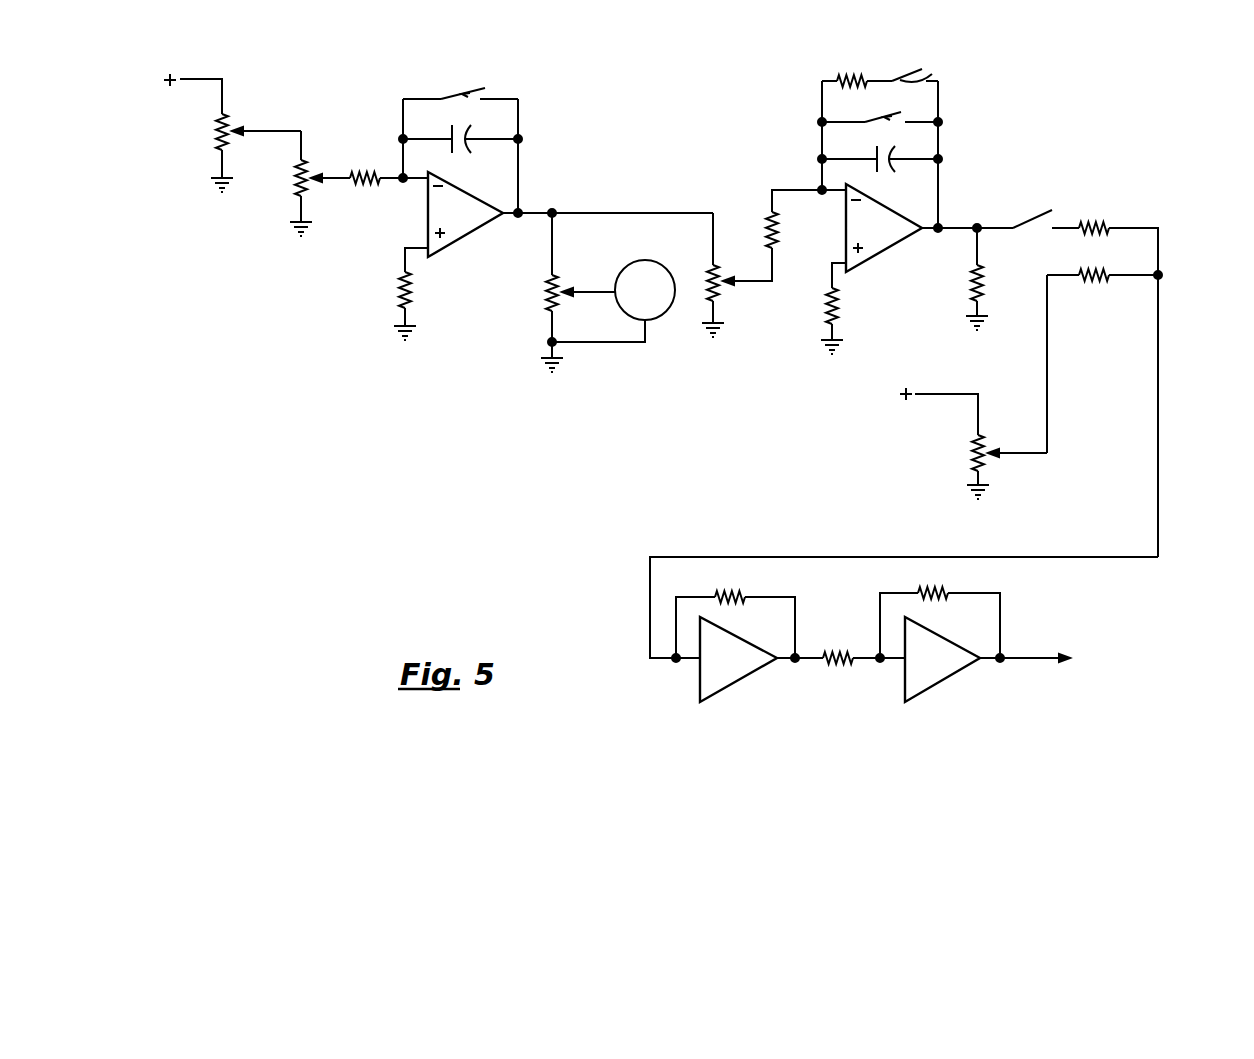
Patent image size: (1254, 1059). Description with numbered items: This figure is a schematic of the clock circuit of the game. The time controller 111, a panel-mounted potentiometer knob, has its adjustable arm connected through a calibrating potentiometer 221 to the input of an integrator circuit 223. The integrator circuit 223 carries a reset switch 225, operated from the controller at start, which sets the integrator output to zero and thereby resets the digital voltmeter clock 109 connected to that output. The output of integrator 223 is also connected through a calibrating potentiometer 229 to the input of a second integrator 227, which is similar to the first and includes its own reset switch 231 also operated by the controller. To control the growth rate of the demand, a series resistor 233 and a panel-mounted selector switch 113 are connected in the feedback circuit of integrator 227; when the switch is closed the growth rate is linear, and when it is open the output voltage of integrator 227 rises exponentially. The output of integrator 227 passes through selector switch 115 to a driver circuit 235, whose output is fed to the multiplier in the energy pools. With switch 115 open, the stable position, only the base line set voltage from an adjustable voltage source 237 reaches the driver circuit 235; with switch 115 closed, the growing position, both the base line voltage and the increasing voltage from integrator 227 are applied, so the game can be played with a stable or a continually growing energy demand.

The time controller 111 is at (234, 119).
The calibrating potentiometer 221 is at (313, 167).
The integrator circuit 223 is at (510, 192).
The reset switch 225 is at (485, 90).
The digital voltmeter clock 109 is at (633, 262).
The calibrating potentiometer 229 is at (717, 269).
The series resistor 233 is at (857, 75).
The selector switch 113 is at (930, 77).
The reset switch 231 is at (888, 120).
The integrator 227 is at (932, 206).
The selector switch 115 is at (1029, 217).
The adjustable voltage source 237 is at (985, 441).
The driver circuit 235 is at (853, 613).